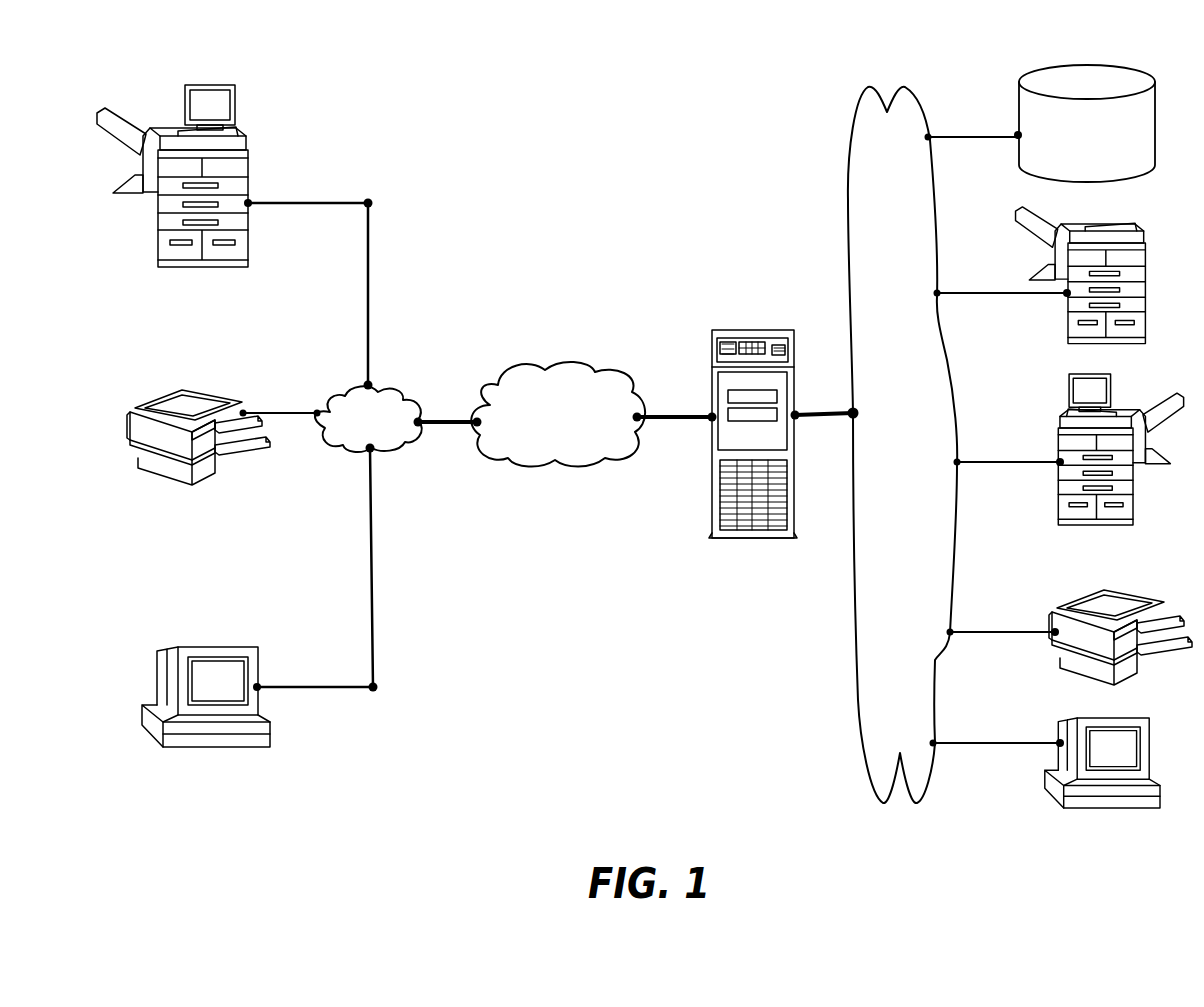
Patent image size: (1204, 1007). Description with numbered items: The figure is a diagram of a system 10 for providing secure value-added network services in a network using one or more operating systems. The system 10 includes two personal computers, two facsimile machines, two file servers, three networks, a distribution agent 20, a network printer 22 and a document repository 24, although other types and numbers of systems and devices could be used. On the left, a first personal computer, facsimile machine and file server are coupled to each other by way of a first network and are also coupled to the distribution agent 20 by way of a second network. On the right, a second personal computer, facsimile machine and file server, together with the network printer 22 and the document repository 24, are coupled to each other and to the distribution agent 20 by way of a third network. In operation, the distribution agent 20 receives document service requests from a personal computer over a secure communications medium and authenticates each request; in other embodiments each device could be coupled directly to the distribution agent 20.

The system 10 is at (611, 183).
The distribution agent 20 is at (742, 330).
The network printer 22 is at (1145, 272).
The document repository 24 is at (1040, 80).